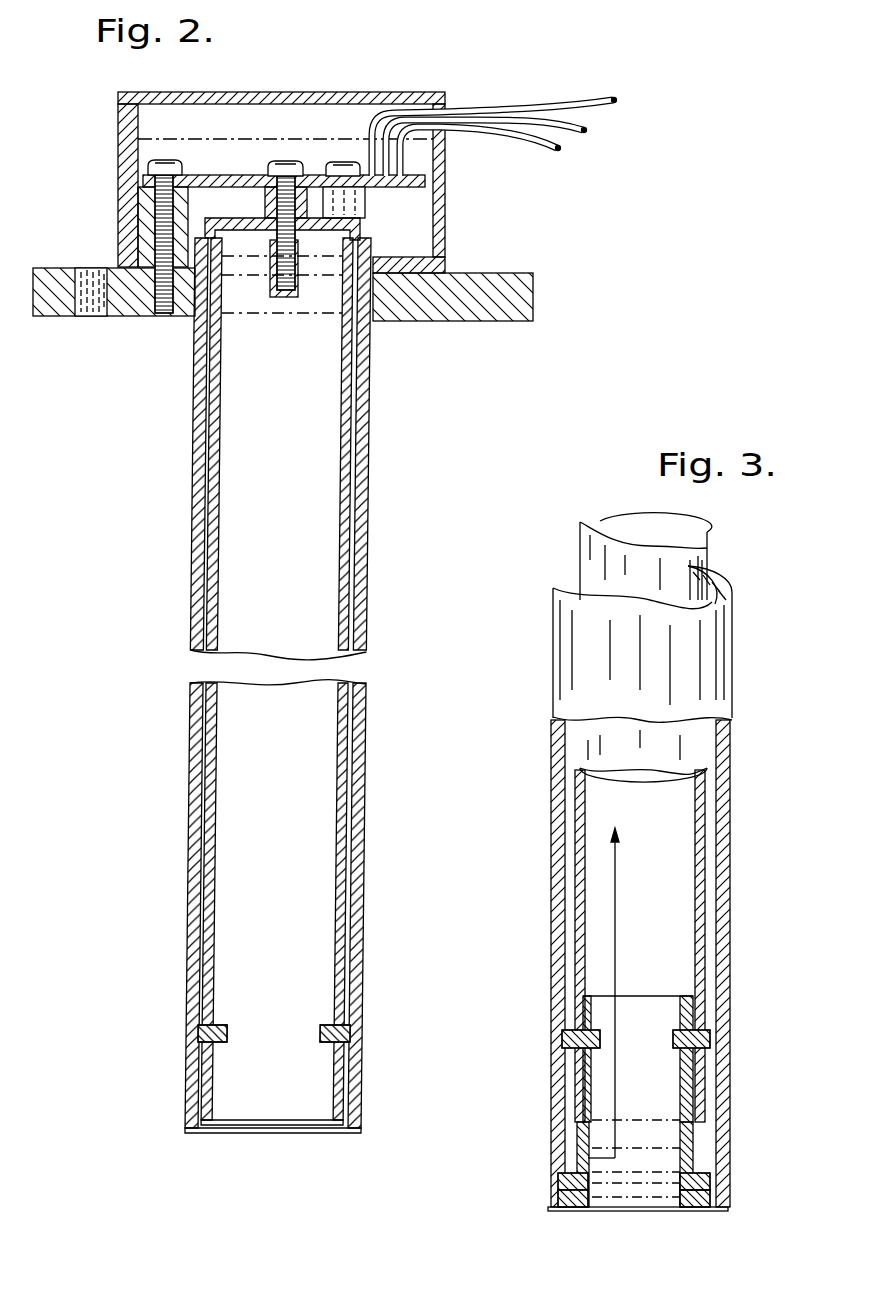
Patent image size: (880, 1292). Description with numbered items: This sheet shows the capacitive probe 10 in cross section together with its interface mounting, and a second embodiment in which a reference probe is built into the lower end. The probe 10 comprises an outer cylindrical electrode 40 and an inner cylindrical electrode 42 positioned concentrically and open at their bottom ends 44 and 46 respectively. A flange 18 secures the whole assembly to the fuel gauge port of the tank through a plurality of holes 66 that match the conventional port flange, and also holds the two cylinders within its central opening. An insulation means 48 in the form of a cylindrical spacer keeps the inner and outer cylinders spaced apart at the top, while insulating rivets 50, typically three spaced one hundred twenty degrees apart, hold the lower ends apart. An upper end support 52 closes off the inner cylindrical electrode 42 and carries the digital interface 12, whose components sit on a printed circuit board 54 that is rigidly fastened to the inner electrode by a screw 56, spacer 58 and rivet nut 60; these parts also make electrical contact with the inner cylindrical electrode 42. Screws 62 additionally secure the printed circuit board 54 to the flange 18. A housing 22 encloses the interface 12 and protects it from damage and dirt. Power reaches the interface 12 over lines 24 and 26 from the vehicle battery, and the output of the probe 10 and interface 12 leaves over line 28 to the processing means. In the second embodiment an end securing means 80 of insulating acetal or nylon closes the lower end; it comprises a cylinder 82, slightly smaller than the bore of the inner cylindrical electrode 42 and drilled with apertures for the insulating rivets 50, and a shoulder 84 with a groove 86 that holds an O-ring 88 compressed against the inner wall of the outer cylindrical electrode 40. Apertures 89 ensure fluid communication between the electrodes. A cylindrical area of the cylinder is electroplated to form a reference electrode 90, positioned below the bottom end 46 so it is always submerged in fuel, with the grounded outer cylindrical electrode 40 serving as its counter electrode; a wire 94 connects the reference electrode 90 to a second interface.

In FIG. 2, the capacitive probe 10 is at (188, 432).
In FIG. 2, the digital interface 12 is at (247, 174).
In FIG. 2, the flange 18 is at (518, 278).
In FIG. 2, the housing 22 is at (128, 207).
In FIG. 2, the power line 24 is at (545, 140).
In FIG. 2, the power line 26 is at (571, 131).
In FIG. 2, the output line 28 is at (586, 97).
In FIG. 2, the outer cylindrical electrode 40 is at (368, 500).
In FIG. 3, the outer cylindrical electrode 40 is at (728, 612).
In FIG. 2, the inner cylindrical electrode 42 is at (350, 476).
In FIG. 3, the inner cylindrical electrode 42 is at (702, 548).
In FIG. 2, the bottom end of outer electrode 44 is at (344, 1133).
In FIG. 2, the bottom end of inner electrode 46 is at (260, 1126).
In FIG. 2, the insulation means 48 is at (373, 243).
In FIG. 2, the insulating rivets 50 is at (200, 1035).
In FIG. 3, the insulating rivets 50 is at (565, 1038).
In FIG. 2, the upper end support 52 is at (262, 238).
In FIG. 2, the printed circuit board 54 is at (410, 192).
In FIG. 2, the screw 56 is at (290, 160).
In FIG. 2, the spacer 58 is at (265, 200).
In FIG. 2, the rivet nut 60 is at (287, 298).
In FIG. 2, the screws 62 is at (150, 168).
In FIG. 2, the holes 66 is at (95, 316).
In FIG. 3, the end securing means 80 is at (696, 1211).
In FIG. 3, the cylinder 82 is at (690, 1093).
In FIG. 3, the shoulder 84 is at (713, 1178).
In FIG. 3, the groove 86 is at (678, 1196).
In FIG. 3, the O-ring 88 is at (713, 1197).
In FIG. 3, the apertures 89 is at (694, 1135).
In FIG. 3, the reference electrode 90 is at (578, 1152).
In FIG. 3, the wire 94 is at (620, 946).